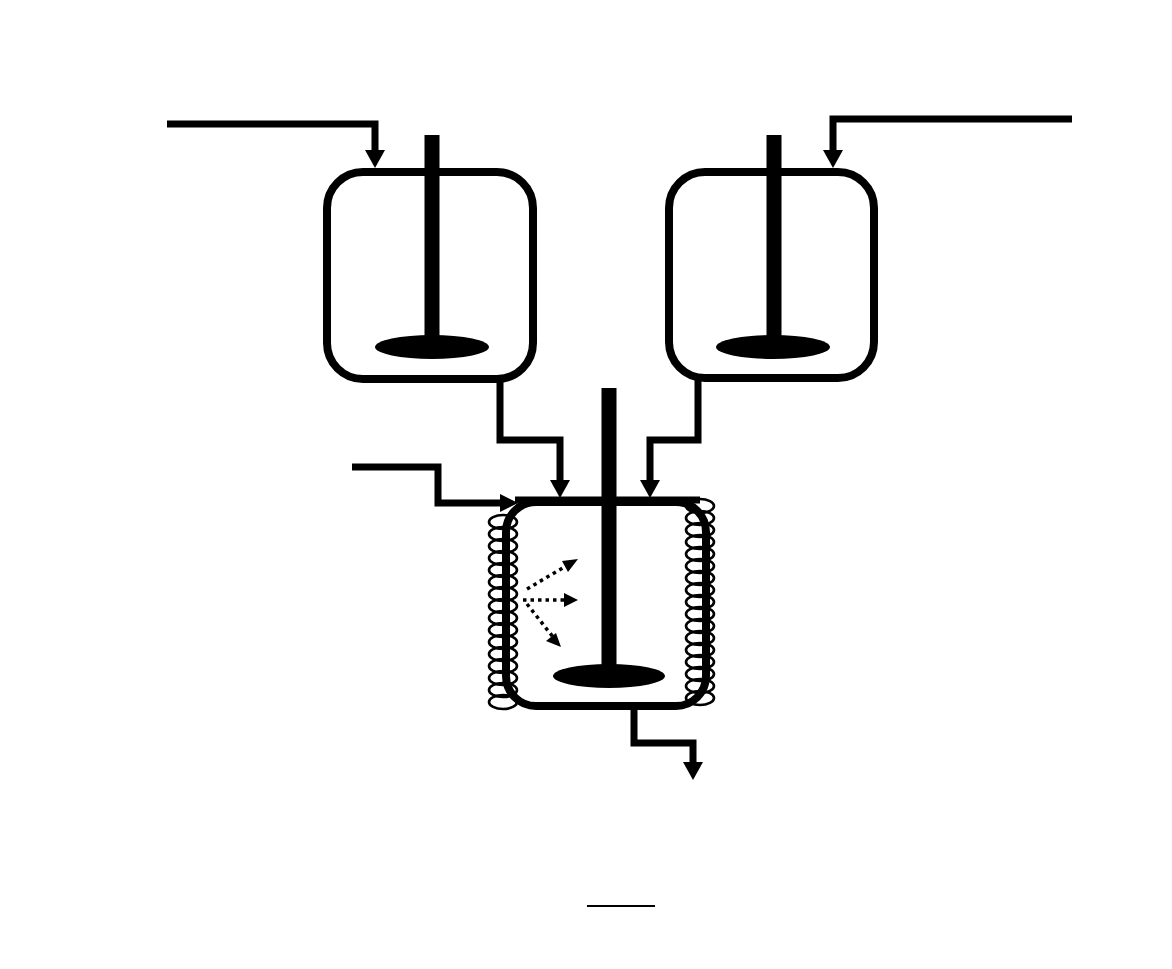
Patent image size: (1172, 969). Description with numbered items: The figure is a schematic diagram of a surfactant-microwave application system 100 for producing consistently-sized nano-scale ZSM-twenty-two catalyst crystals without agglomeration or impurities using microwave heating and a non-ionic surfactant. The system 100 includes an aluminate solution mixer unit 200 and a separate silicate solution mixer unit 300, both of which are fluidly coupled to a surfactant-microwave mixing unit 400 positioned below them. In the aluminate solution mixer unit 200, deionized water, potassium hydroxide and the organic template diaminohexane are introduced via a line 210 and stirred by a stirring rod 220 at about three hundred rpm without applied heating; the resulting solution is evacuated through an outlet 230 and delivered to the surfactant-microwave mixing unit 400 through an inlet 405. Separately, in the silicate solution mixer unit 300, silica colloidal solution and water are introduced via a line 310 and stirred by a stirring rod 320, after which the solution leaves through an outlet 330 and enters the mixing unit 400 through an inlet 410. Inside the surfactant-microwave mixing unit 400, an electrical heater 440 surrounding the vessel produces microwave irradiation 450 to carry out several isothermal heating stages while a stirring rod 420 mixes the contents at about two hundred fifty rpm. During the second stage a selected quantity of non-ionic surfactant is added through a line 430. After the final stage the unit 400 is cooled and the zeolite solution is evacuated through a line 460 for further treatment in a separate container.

The surfactant-microwave application system 100 is at (988, 559).
The aluminate solution mixer unit 200 is at (322, 240).
The line 210 is at (167, 124).
The stirring rod 220 is at (420, 129).
The outlet 230 is at (492, 400).
The silicate solution mixer unit 300 is at (880, 250).
The line 310 is at (1072, 116).
The stirring rod 320 is at (760, 131).
The outlet 330 is at (707, 398).
The surfactant-microwave mixing unit 400 is at (553, 718).
The inlet 405 is at (548, 487).
The inlet 410 is at (662, 487).
The stirring rod 420 is at (612, 388).
The line 430 is at (365, 477).
The electrical heater 440 is at (714, 598).
The microwave irradiation 450 is at (530, 640).
The line 460 is at (705, 762).